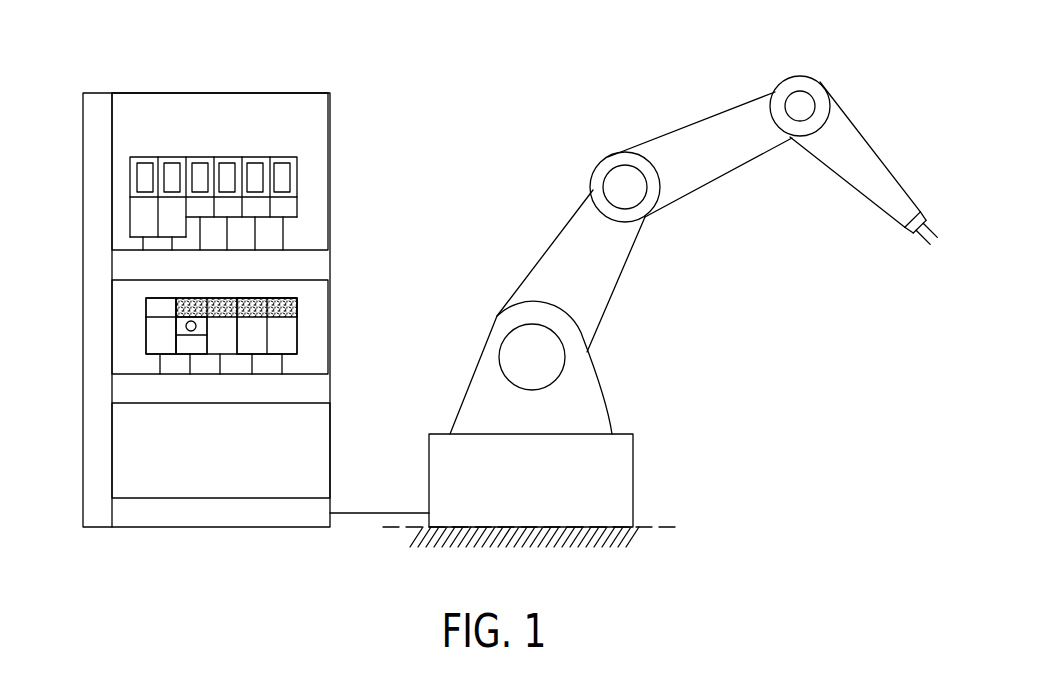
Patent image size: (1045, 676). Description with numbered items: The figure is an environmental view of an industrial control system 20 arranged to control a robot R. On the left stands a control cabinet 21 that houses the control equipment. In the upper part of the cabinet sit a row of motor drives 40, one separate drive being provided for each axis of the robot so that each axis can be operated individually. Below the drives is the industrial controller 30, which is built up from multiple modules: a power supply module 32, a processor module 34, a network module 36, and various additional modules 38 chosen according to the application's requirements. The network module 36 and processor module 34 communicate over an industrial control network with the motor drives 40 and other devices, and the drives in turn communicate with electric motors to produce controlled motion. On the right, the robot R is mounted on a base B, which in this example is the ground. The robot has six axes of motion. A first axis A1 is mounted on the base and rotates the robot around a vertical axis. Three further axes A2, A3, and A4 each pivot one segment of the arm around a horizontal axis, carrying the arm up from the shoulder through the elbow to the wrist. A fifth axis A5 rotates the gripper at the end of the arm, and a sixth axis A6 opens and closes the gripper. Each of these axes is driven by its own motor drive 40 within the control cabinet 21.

The industrial control system 20 is at (70, 140).
The control cabinet 21 is at (207, 93).
The motor drive 40 is at (278, 157).
The industrial controller 30 is at (142, 333).
The power supply module 32 is at (155, 348).
The processor module 34 is at (193, 347).
The network module 36 is at (223, 298).
The additional modules 38 is at (257, 297).
The robot R is at (602, 135).
The first axis A1 is at (650, 455).
The second axis A2 is at (597, 362).
The third axis A3 is at (663, 222).
The fourth axis A4 is at (823, 80).
The fifth axis A5 is at (920, 198).
The sixth axis A6 is at (910, 240).
The base B is at (647, 535).